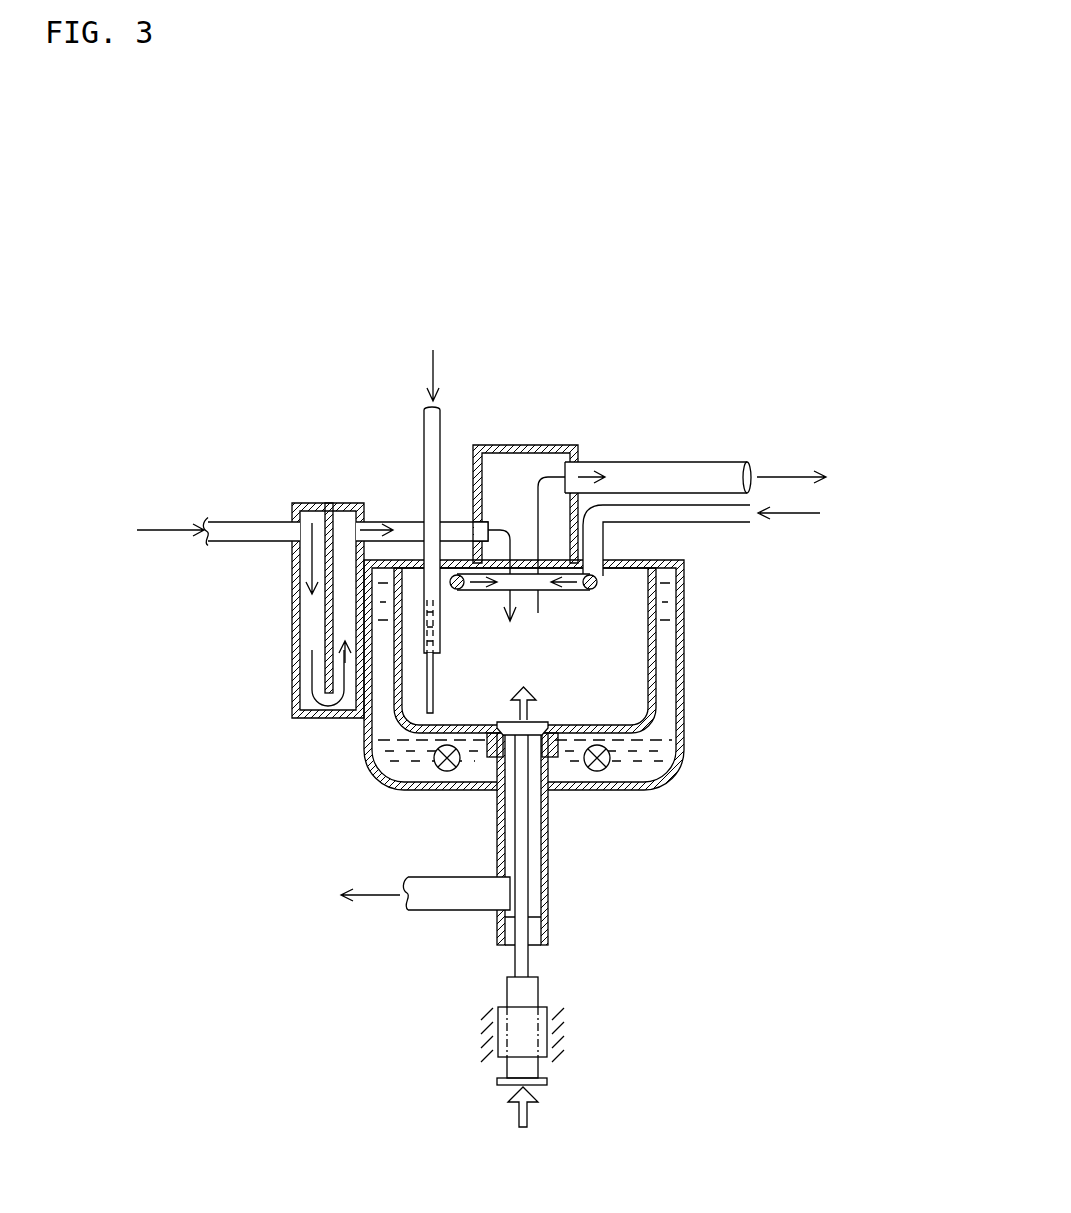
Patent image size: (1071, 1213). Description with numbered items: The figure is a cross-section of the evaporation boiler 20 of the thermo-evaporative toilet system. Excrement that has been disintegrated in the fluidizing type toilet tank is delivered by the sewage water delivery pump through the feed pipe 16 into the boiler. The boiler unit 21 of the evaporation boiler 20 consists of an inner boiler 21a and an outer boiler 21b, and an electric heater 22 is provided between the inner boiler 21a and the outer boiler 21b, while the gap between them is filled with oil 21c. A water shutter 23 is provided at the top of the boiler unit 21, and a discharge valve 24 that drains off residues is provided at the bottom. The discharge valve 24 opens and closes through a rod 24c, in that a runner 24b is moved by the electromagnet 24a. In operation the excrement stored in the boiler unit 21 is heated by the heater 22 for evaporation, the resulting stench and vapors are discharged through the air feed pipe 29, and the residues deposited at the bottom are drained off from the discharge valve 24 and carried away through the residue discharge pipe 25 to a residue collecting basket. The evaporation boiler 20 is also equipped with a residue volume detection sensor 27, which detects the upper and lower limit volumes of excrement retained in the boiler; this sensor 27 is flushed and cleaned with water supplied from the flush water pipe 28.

The feed pipe 16 is at (231, 522).
The evaporation boiler 20 is at (616, 352).
The boiler unit 21 is at (594, 675).
The inner boiler 21a is at (657, 627).
The outer boiler 21b is at (682, 675).
The oil 21c is at (766, 617).
The electric heater 22 is at (442, 793).
The water shutter 23 is at (588, 590).
The discharge valve 24 is at (579, 901).
The electromagnet 24a is at (543, 1025).
The runner 24b is at (535, 1068).
The rod 24c is at (528, 883).
The residue discharge pipe 25 is at (427, 900).
The residue volume detection sensor 27 is at (433, 687).
The flush water pipe 28 is at (425, 427).
The air feed pipe 29 is at (667, 462).